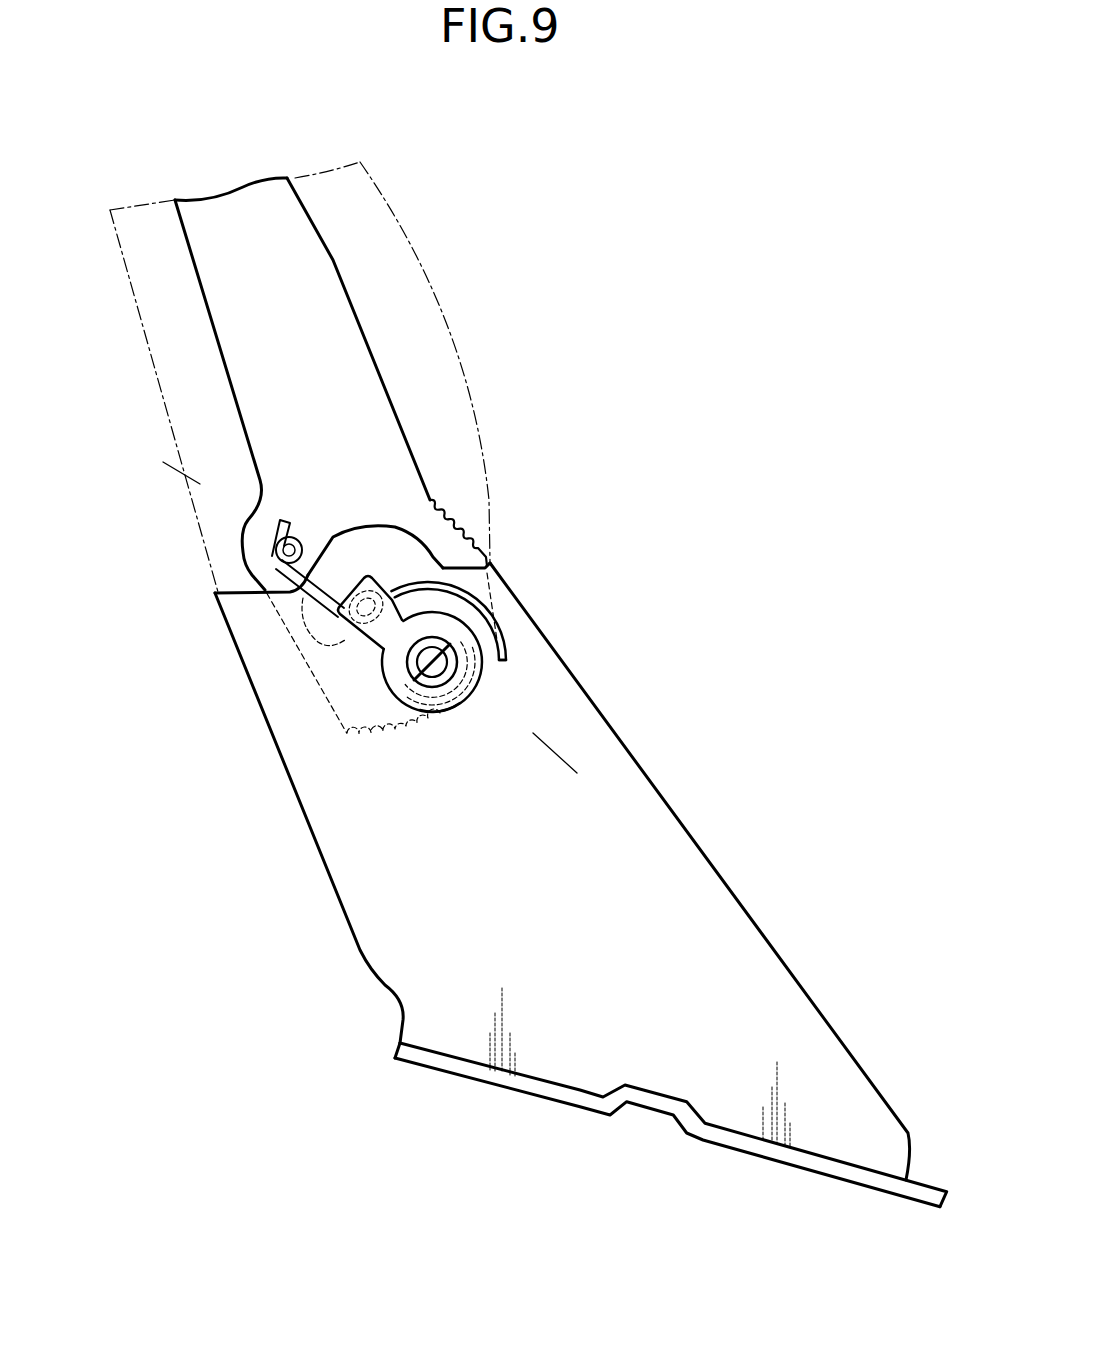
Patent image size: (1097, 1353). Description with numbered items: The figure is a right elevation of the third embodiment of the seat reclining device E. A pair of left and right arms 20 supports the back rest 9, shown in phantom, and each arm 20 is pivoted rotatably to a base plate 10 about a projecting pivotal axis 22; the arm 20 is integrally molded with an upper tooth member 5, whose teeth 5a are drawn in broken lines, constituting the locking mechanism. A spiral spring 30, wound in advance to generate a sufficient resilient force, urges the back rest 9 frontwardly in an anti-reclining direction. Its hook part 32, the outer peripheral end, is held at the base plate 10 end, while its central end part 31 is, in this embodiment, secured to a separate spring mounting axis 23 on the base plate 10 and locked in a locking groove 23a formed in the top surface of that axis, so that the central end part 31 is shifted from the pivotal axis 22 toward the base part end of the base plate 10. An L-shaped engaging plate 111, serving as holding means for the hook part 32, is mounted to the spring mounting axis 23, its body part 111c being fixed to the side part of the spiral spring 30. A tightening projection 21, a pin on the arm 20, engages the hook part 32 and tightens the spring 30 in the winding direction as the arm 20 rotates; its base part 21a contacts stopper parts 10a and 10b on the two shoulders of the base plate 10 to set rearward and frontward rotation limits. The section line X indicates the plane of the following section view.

The back rest 9 is at (387, 208).
The arm 20 is at (367, 350).
The tightening projection 21 is at (292, 528).
The base part of tightening projection 21a is at (303, 540).
The pivotal axis 22 is at (325, 628).
The spring mounting axis 23 is at (328, 700).
The locking groove 23a is at (443, 688).
The spiral spring 30 is at (508, 657).
The central end part 31 is at (368, 679).
The hook part 32 is at (300, 600).
The upper tooth member 5 is at (350, 736).
The gear teeth 5a is at (399, 736).
The base plate 10 is at (697, 845).
The stopper part 10a is at (276, 590).
The stopper part 10b is at (463, 567).
The engaging plate 111 is at (365, 578).
The body part 111c is at (477, 598).
The seat reclining device E is at (588, 462).
The section line X- X is at (166, 474).